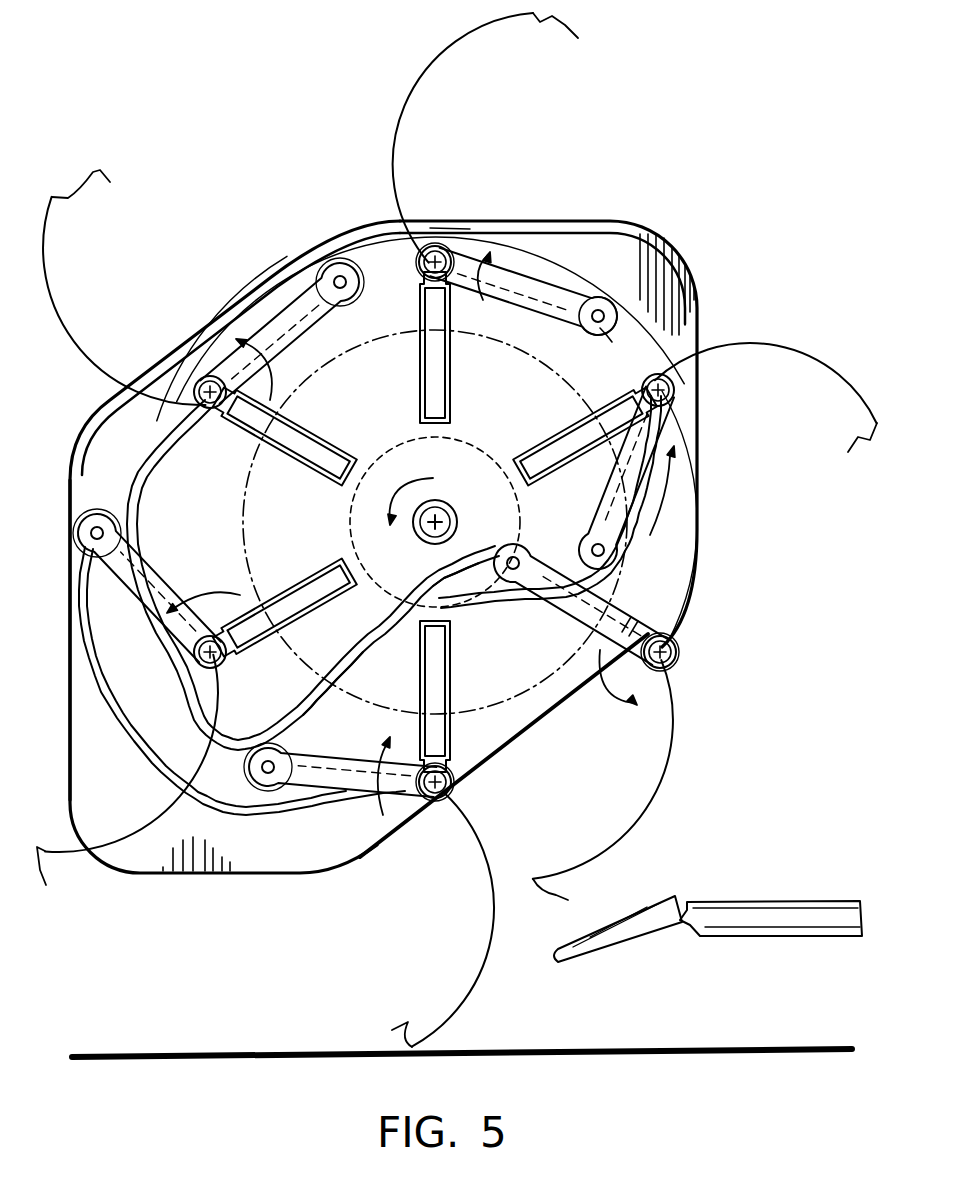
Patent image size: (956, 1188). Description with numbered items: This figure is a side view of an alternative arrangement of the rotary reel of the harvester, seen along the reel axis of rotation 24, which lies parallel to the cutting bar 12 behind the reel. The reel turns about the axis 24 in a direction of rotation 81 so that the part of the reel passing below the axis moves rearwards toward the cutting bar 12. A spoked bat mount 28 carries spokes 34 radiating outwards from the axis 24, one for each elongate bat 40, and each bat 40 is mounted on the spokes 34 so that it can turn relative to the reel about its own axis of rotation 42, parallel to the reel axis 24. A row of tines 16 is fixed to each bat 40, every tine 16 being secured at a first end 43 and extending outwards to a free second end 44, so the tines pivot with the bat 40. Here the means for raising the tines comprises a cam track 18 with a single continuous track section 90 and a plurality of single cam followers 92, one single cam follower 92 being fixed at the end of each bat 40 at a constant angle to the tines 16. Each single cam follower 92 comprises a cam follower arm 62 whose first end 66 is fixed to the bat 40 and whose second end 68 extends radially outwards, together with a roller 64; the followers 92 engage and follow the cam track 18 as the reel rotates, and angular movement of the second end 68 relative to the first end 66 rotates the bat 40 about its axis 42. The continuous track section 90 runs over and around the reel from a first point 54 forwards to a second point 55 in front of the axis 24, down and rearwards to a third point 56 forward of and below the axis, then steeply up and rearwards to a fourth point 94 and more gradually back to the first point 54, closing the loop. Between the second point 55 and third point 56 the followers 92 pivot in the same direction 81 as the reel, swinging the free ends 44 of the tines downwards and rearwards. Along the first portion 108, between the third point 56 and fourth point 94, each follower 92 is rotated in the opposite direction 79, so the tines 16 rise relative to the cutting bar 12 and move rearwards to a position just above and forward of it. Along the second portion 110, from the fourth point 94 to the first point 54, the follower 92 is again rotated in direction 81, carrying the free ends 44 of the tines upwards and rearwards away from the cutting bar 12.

The cutting bar 12 is at (600, 960).
The tines 16 is at (422, 63).
The cam track 18 is at (178, 343).
The axis of rotation 24 is at (420, 538).
The bat mount 28 is at (250, 462).
The spokes 34 is at (455, 360).
The bats 40 is at (418, 262).
The axis of rotation 42 is at (402, 232).
The first end 43 is at (433, 240).
The free second end 44 is at (457, 530).
The first point 54 is at (600, 565).
The second point 55 is at (80, 532).
The third point 56 is at (268, 738).
The cam follower arm 62 is at (330, 356).
The roller 64 is at (603, 330).
The first end 66 is at (475, 228).
The second end 68 is at (605, 305).
The direction 79 is at (380, 842).
The direction 81 is at (480, 310).
The continuous track section 90 is at (117, 444).
The single cam follower 92 is at (258, 316).
The fourth point 94 is at (470, 556).
The first portion 108 is at (366, 652).
The second portion 110 is at (558, 516).